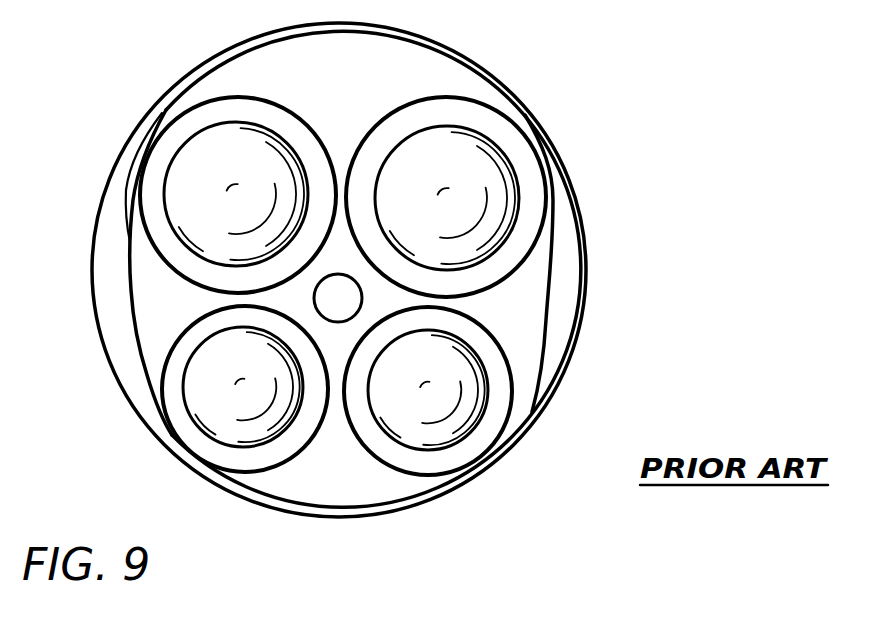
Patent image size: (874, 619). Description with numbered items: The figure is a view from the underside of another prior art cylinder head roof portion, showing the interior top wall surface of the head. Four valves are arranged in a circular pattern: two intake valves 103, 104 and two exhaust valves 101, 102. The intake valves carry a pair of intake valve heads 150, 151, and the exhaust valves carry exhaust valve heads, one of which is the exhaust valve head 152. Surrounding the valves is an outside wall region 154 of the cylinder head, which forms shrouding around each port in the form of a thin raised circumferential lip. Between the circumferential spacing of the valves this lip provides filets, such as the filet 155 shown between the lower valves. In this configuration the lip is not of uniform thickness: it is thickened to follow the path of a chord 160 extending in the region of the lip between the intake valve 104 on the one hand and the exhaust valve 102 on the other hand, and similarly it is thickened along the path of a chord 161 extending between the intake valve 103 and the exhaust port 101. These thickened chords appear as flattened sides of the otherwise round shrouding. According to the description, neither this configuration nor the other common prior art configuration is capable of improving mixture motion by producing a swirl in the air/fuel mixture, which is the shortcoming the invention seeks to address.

The exhaust valve 101 is at (260, 443).
The exhaust valve 102 is at (461, 436).
The intake valve 103 is at (192, 141).
The intake valve 104 is at (505, 159).
The intake valve head 150 is at (200, 212).
The intake valve head 151 is at (498, 210).
The exhaust valve head 152 is at (205, 382).
The outside wall region 154 is at (465, 65).
The filet 155 is at (463, 397).
The chord 160 is at (548, 304).
The chord 161 is at (135, 311).